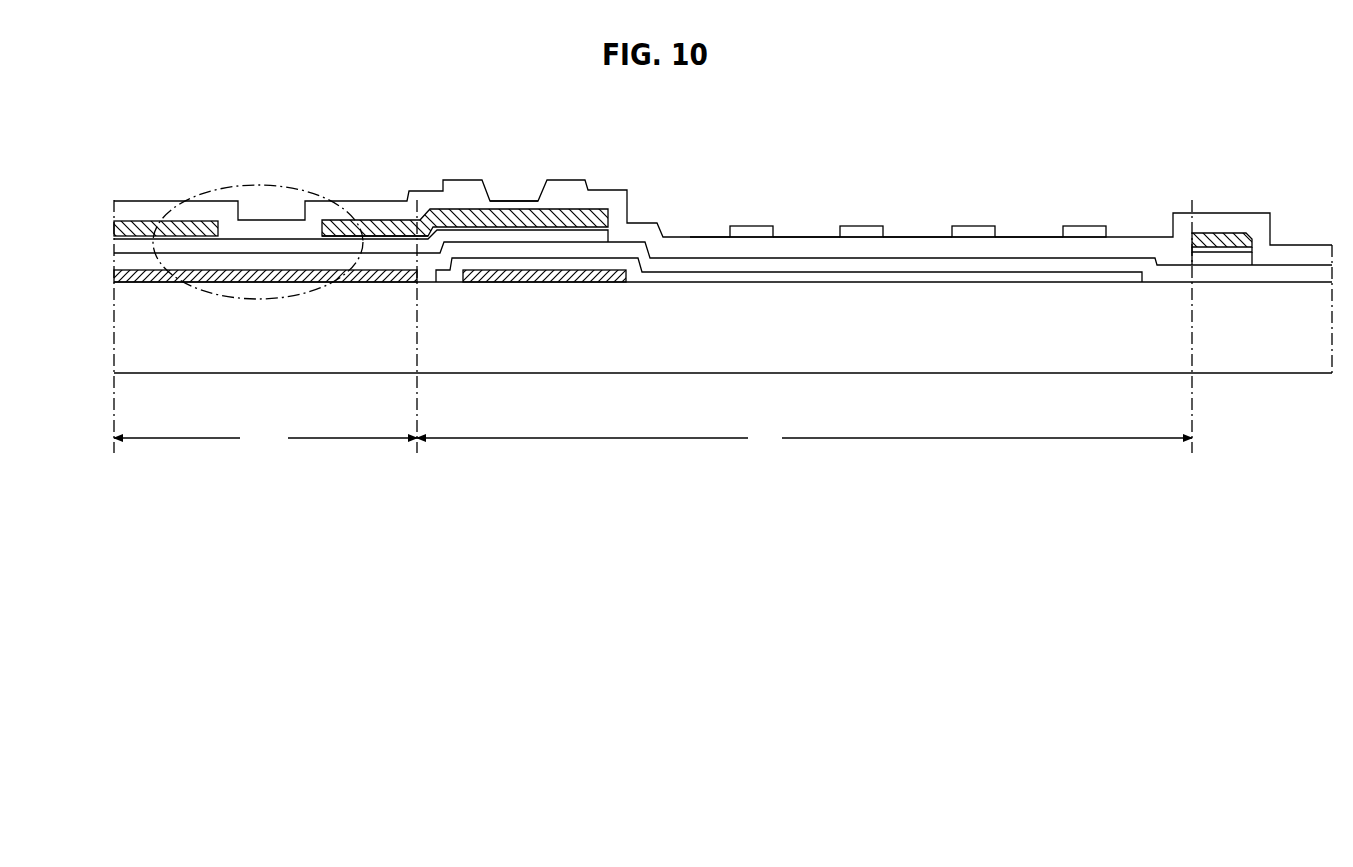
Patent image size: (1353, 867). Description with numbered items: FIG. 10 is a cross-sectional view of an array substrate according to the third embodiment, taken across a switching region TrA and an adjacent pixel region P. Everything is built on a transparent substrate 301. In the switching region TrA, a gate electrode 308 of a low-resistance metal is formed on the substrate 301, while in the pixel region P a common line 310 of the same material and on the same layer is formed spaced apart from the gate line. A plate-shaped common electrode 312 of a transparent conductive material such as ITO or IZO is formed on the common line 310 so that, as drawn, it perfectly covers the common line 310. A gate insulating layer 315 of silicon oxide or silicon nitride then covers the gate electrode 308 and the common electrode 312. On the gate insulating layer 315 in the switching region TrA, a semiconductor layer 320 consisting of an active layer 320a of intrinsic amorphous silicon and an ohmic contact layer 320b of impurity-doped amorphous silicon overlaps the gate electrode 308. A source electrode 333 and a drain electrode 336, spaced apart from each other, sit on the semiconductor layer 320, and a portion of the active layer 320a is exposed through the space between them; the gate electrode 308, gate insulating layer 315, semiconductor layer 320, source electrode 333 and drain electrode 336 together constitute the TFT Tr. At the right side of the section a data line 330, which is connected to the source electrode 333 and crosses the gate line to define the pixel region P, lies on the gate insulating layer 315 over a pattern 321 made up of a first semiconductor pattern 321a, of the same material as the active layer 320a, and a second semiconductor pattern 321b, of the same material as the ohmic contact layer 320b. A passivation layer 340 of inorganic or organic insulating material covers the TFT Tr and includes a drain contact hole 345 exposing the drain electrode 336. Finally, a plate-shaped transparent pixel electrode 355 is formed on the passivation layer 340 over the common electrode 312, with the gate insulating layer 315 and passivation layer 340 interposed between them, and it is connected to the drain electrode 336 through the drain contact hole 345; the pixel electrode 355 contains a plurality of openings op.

The substrate 301 is at (1322, 365).
The gate electrode 308 is at (247, 283).
The common line 310 is at (533, 283).
The common electrode 312 is at (802, 273).
The gate insulating layer 315 is at (895, 262).
The semiconductor layer 320 is at (361, 254).
The active layer 320a is at (345, 237).
The ohmic contact layer 320b is at (383, 239).
The pattern 321 is at (1239, 309).
The first semiconductor pattern 321a is at (1203, 268).
The second semiconductor pattern 321b is at (1238, 262).
The data line 330 is at (1223, 233).
The source electrode 333 is at (197, 222).
The drain electrode 336 is at (371, 238).
The passivation layer 340 is at (422, 200).
The drain contact hole 345 is at (515, 185).
The pixel electrode 355 is at (752, 229).
The opening op is at (706, 228).
The TFT Tr is at (203, 295).
The switching region TrA is at (265, 437).
The pixel region P is at (804, 437).